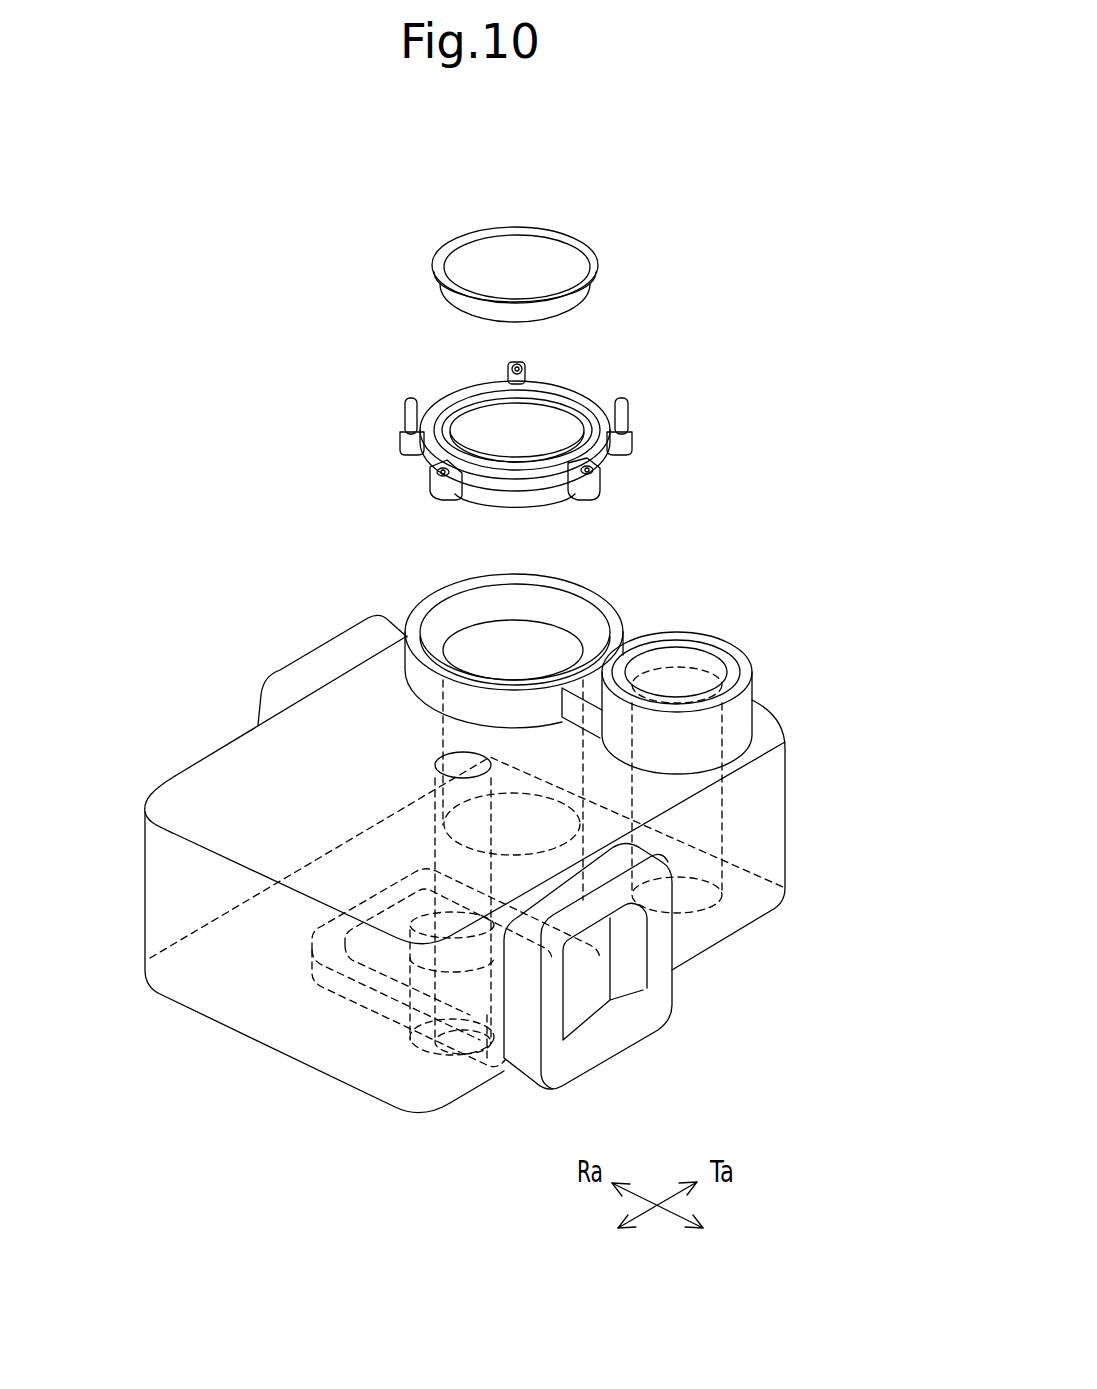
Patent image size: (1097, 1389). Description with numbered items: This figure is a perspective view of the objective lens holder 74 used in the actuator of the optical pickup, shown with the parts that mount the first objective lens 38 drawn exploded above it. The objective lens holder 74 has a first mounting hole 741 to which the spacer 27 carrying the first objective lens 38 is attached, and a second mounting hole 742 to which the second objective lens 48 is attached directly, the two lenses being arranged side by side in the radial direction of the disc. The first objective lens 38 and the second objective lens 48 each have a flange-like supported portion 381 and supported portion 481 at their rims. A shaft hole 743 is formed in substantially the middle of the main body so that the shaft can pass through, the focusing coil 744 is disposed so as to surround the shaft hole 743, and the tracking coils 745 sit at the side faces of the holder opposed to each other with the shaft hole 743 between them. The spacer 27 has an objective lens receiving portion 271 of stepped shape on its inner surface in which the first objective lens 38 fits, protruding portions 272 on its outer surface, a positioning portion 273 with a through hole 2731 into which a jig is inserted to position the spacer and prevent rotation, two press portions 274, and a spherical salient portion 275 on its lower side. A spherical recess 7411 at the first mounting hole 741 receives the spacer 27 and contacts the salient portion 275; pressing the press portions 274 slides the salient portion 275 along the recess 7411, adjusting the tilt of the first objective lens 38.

The spacer 27 is at (560, 423).
The objective lens receiving portion 271 is at (573, 414).
The protruding portions 272 is at (403, 403).
The positioning portion 273 is at (535, 336).
The through hole 2731 is at (527, 363).
The press portions 274 is at (432, 483).
The salient portion 275 is at (540, 504).
The first objective lens 38 is at (527, 256).
The supported portion 381 is at (593, 268).
The second objective lens 48 is at (749, 743).
The supported portion 481 is at (707, 645).
The objective lens holder 74 is at (484, 757).
The first mounting hole 741 is at (440, 732).
The second mounting hole 742 is at (722, 730).
The shaft hole 743 is at (433, 837).
The focusing coil 744 is at (353, 993).
The tracking coils 745 is at (317, 667).
The recess 7411 is at (432, 623).